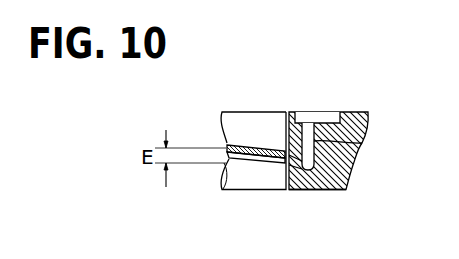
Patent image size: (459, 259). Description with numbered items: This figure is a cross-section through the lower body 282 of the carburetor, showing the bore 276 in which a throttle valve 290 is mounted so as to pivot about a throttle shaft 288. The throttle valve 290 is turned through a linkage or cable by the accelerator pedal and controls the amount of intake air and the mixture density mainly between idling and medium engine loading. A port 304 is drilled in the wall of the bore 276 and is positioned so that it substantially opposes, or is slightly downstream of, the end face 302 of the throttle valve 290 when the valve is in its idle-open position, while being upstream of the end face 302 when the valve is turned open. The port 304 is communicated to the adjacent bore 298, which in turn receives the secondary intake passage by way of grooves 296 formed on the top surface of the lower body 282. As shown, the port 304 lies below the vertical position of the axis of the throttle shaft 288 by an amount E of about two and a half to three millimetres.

The bore 276 is at (283, 112).
The lower body 282 is at (366, 110).
The throttle shaft 288 is at (228, 165).
The throttle valve 290 is at (258, 148).
The grooves 296 is at (325, 112).
The bore 298 is at (354, 148).
The end face 302 is at (288, 182).
The port 304 is at (296, 178).